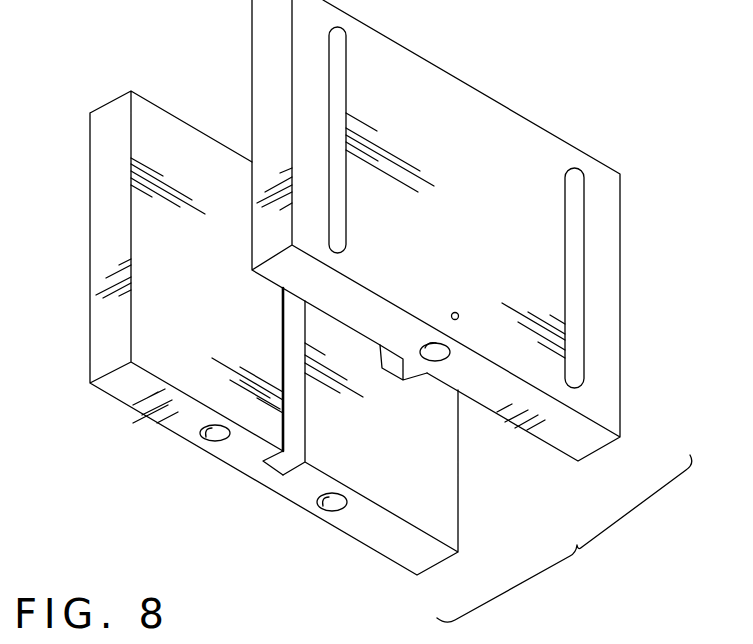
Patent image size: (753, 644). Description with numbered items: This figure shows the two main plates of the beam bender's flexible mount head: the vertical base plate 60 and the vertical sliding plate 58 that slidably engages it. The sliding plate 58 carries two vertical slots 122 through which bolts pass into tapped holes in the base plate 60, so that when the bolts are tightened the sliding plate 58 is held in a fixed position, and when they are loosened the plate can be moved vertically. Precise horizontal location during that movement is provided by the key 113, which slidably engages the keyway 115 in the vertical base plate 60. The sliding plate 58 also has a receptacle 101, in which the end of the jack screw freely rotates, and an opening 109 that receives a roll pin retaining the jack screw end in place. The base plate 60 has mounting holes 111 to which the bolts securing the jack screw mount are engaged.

The vertical sliding plate 58 is at (607, 340).
The vertical base plate 60 is at (427, 494).
The receptacle 101 is at (430, 342).
The opening 109 is at (456, 312).
The mounting holes 111 is at (195, 443).
The key 113 is at (410, 368).
The keyway 115 is at (276, 461).
The vertical slots 122 is at (330, 66).